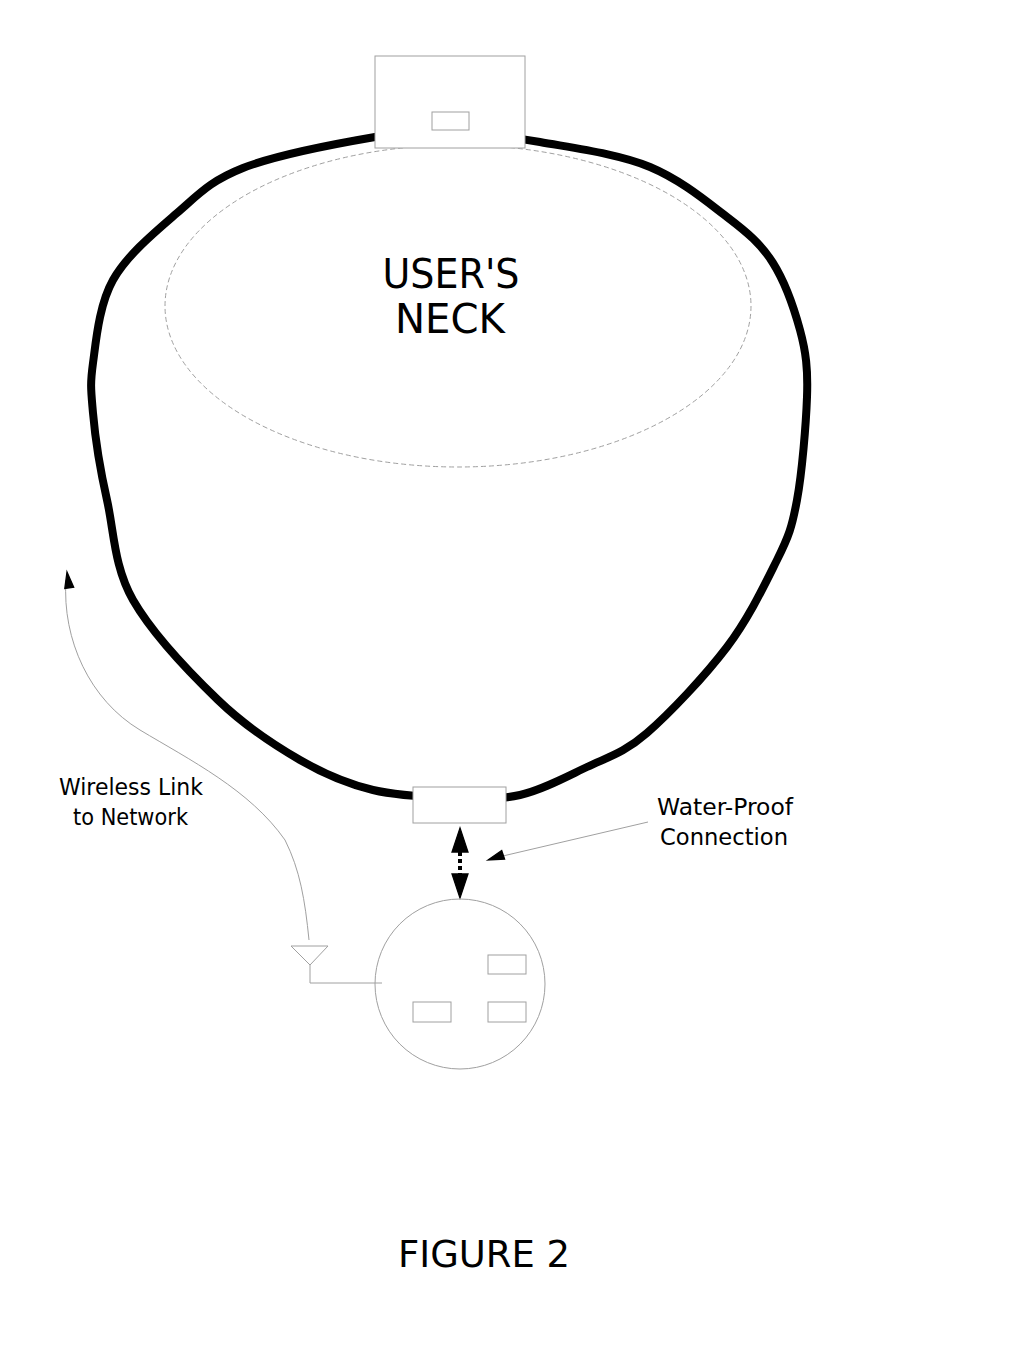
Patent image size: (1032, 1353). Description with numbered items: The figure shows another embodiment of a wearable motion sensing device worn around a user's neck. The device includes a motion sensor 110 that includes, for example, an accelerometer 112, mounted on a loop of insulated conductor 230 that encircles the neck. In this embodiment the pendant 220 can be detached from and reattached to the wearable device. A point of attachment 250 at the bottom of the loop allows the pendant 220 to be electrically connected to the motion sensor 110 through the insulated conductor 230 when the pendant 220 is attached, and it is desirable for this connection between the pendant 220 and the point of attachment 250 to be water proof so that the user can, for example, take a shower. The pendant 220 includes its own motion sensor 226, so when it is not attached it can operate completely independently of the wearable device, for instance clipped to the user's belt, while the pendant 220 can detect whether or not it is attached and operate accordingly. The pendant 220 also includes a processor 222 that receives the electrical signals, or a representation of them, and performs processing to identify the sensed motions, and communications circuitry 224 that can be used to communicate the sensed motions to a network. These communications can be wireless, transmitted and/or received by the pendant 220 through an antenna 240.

The motion sensor 110 is at (452, 70).
The accelerometer 112 is at (448, 106).
The insulated conductor 230 is at (723, 645).
The point of attachment 250 is at (461, 785).
The antenna 240 is at (308, 940).
The pendant 220 is at (461, 1070).
The processor 222 is at (509, 1024).
The communications circuitry 224 is at (431, 1024).
The motion sensor 226 is at (512, 953).